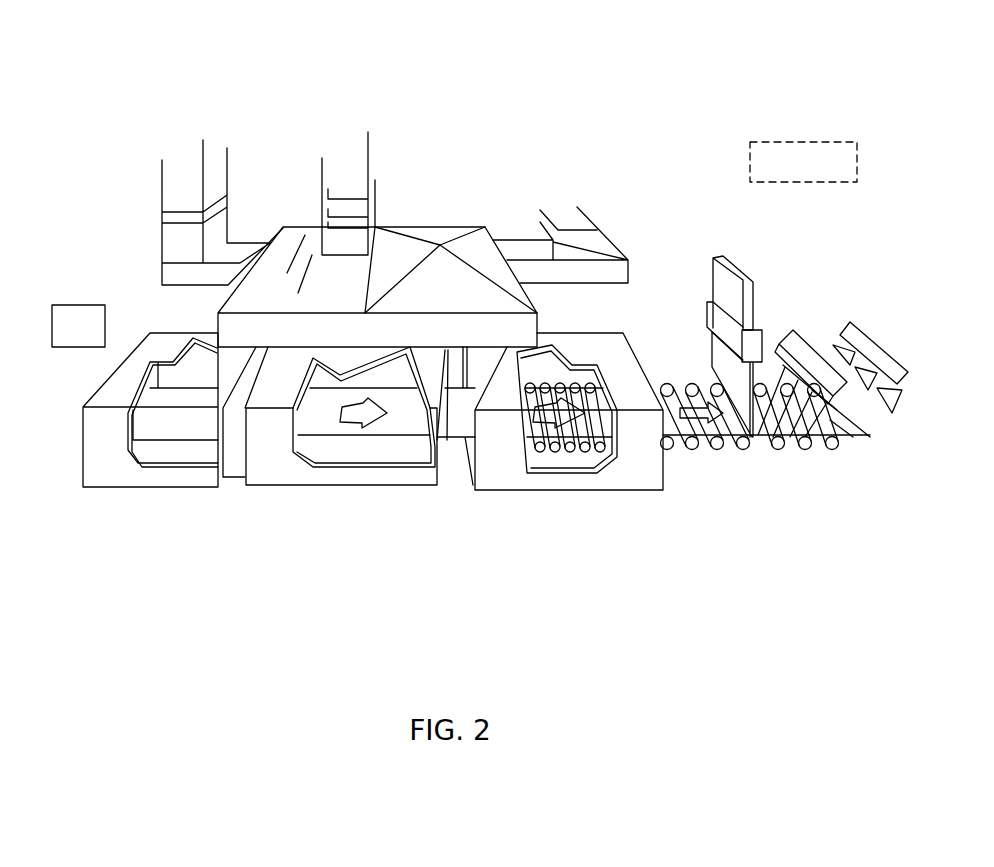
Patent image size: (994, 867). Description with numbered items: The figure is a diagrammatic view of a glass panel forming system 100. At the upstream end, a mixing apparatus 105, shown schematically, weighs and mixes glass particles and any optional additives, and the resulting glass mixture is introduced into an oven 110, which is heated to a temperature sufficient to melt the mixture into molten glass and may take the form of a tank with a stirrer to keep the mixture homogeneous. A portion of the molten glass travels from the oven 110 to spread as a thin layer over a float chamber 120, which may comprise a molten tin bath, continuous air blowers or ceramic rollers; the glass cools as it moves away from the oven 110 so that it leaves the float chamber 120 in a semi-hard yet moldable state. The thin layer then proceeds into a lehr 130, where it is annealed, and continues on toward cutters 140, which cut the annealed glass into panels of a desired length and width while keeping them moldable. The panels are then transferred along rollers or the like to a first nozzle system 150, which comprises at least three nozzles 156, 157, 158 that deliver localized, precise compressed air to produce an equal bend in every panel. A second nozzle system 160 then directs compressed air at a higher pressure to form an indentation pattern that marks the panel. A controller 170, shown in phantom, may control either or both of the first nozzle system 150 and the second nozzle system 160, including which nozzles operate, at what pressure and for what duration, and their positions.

The glass panel forming system 100 is at (232, 72).
The mixing apparatus 105 is at (87, 303).
The oven 110 is at (146, 455).
The float chamber 120 is at (350, 443).
The lehr 130 is at (565, 484).
The cutters 140 is at (717, 249).
The first nozzle system 150 is at (797, 322).
The nozzle 156 is at (786, 369).
The nozzle 157 is at (809, 390).
The nozzle 158 is at (844, 411).
The second nozzle system 160 is at (872, 322).
The controller 170 is at (803, 162).